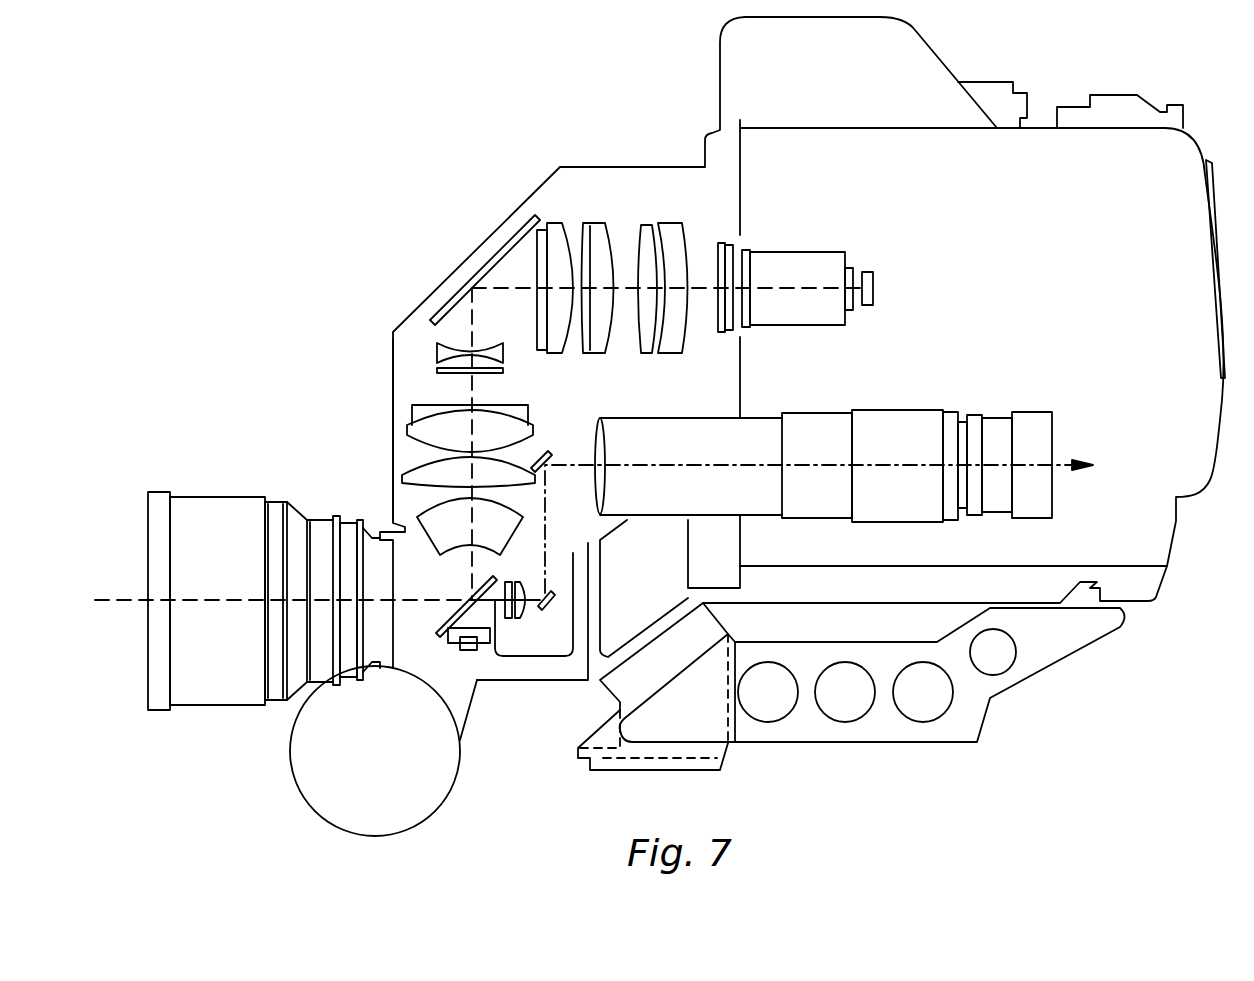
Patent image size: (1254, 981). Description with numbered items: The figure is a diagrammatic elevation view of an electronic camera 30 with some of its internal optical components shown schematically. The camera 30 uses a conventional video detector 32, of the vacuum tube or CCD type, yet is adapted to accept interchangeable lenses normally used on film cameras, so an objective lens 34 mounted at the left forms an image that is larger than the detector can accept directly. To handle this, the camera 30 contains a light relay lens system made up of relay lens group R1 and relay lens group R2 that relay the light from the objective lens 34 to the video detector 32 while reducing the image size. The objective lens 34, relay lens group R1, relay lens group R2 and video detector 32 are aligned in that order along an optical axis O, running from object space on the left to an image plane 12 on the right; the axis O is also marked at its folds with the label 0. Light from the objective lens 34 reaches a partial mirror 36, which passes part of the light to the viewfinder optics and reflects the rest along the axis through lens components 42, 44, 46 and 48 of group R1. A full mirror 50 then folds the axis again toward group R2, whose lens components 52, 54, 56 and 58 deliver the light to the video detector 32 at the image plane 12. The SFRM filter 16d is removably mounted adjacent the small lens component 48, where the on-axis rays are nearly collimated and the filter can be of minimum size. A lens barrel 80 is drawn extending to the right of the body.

The electronic camera 30 is at (292, 316).
The video detector 32 is at (864, 250).
The image plane 12 is at (878, 294).
The objective lens 34 is at (217, 496).
The partial mirror 36 is at (445, 627).
The optical lens component 42 is at (497, 527).
The optical lens component 44 is at (523, 483).
The optical lens component 46 is at (503, 430).
The optical lens component 48 is at (437, 352).
The SFRM filter 16d is at (437, 370).
The full mirror 50 is at (470, 283).
The optical lens component 52 is at (557, 348).
The optical lens component 54 is at (590, 352).
The optical lens component 56 is at (645, 350).
The optical lens component 58 is at (682, 348).
The lens barrel 80 is at (836, 408).
The relay lens group R1 is at (378, 342).
The relay lens group R2 is at (692, 212).
The optical axis O is at (302, 444).
The optical axis 0 is at (103, 598).